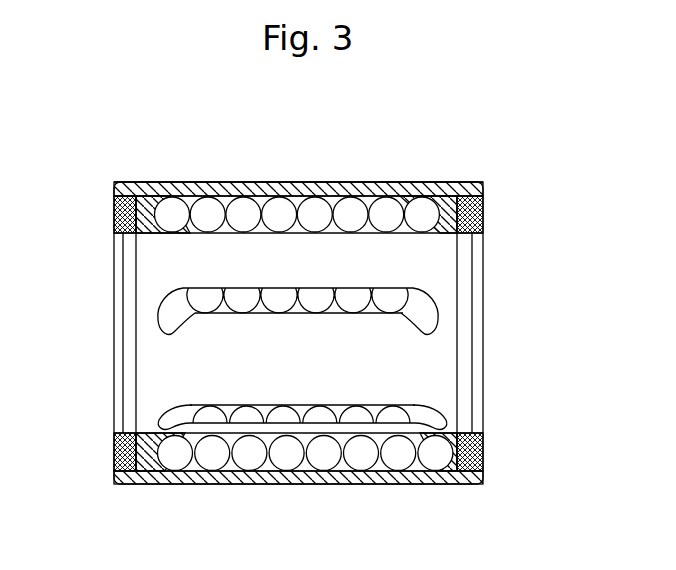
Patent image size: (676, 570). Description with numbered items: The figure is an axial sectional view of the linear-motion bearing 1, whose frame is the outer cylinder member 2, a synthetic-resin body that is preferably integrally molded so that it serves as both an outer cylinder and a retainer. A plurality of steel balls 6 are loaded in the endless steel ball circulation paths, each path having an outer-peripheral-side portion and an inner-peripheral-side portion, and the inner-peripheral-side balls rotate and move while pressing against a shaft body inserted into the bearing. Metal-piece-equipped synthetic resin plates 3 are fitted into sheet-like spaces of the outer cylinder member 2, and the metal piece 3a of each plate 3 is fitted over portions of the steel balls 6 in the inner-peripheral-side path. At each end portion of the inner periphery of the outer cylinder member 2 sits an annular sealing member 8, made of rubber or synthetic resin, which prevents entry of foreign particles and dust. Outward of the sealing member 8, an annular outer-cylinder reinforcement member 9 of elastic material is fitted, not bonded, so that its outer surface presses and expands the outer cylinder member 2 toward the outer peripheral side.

The linear-motion bearing 1 is at (515, 162).
The outer cylinder member 2 is at (484, 212).
The metal-piece-equipped synthetic resin plate 3 is at (174, 183).
The metal piece 3a is at (303, 183).
The steel balls 6 is at (274, 206).
The annular sealing member 8 is at (114, 219).
The annular outer-cylinder reinforcement member 9 is at (120, 193).